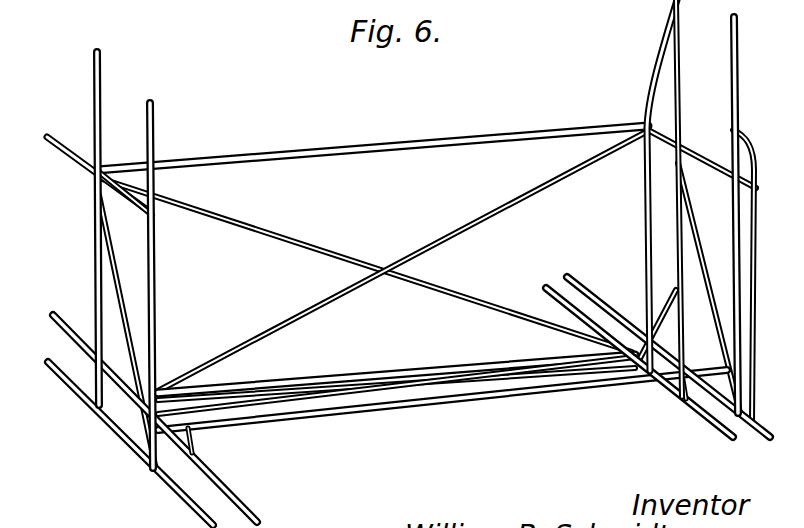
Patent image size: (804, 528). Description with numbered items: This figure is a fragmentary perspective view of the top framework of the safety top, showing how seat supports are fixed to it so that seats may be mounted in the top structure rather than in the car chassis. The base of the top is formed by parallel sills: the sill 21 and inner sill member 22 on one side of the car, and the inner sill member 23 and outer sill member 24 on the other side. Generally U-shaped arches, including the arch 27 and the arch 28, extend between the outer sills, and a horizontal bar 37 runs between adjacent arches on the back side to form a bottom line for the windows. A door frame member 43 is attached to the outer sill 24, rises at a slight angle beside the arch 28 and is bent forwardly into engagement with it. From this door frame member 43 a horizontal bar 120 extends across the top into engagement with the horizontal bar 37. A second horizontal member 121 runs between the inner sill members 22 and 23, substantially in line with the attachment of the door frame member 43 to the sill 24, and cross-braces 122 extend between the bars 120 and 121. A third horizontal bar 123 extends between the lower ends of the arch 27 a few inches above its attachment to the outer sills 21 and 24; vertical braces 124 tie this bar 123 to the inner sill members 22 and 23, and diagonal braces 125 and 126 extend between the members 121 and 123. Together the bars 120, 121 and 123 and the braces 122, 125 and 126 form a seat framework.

The sill 21 is at (62, 373).
The inner sill member 22 is at (62, 317).
The inner sill member 23 is at (540, 300).
The outer sill member 24 is at (586, 283).
The arch 27 is at (160, 127).
The arch 28 is at (105, 83).
The horizontal bar 37 is at (58, 134).
The door frame member 43 is at (653, 80).
The horizontal bar 120 is at (406, 143).
The second horizontal member 121 is at (385, 378).
The cross-braces 122 is at (316, 241).
The third horizontal bar 123 is at (400, 408).
The vertical braces 124 is at (196, 441).
The diagonal brace 125 is at (284, 394).
The diagonal brace 126 is at (487, 372).